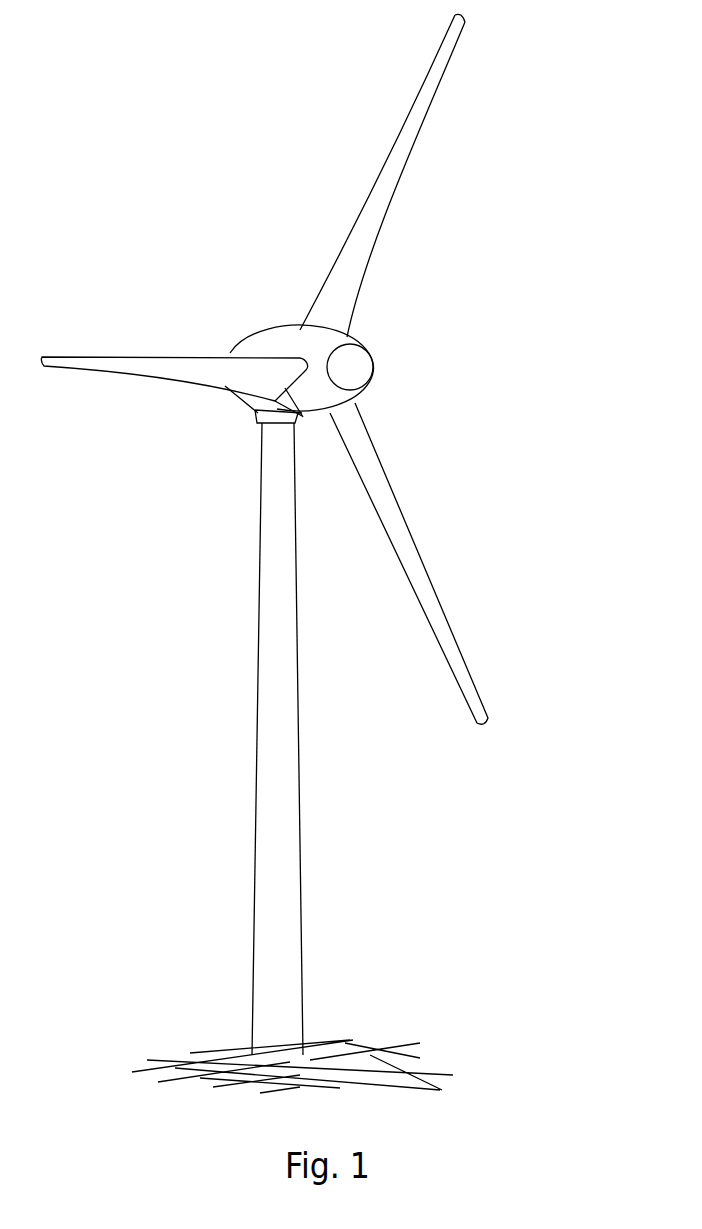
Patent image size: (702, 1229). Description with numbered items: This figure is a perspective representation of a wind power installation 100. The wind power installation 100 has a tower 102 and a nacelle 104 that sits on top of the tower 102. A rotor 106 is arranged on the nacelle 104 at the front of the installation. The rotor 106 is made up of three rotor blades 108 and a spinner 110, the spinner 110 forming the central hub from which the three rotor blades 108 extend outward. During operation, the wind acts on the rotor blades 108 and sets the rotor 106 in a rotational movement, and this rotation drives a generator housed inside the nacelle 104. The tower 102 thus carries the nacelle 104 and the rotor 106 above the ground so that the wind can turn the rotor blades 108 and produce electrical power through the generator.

The wind power installation 100 is at (212, 494).
The tower 102 is at (283, 833).
The nacelle 104 is at (268, 333).
The rotor 106 is at (440, 292).
The rotor blades 108 is at (413, 135).
The spinner 110 is at (355, 372).